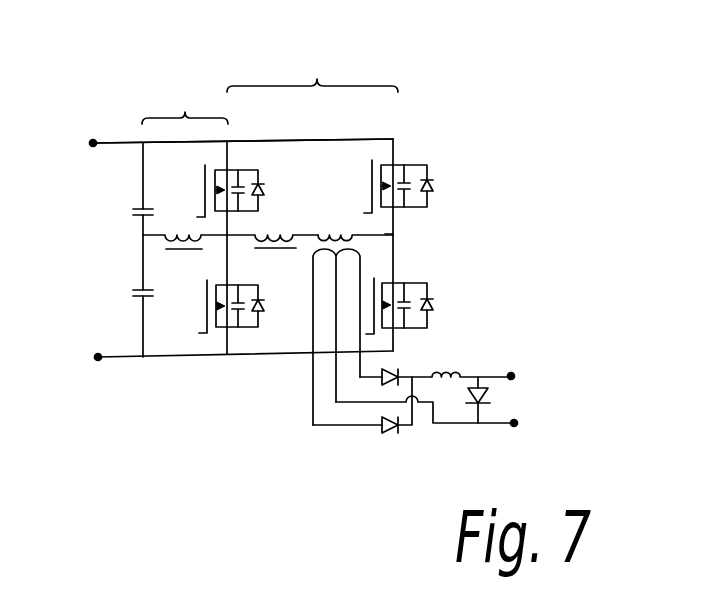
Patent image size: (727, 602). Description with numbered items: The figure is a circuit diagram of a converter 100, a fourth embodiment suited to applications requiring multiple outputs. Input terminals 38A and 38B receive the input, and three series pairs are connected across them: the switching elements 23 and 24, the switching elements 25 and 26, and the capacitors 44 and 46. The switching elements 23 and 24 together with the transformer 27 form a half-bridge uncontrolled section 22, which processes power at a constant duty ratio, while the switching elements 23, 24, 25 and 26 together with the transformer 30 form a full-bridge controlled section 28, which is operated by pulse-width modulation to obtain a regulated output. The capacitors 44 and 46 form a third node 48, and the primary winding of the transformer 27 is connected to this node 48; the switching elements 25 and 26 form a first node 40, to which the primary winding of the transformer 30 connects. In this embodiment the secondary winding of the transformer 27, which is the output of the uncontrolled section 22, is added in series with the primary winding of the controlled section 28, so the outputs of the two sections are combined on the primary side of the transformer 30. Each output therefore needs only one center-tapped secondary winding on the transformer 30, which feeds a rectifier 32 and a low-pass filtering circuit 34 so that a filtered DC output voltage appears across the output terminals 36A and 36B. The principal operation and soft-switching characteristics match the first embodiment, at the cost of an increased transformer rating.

The half-bridge uncontrolled section 22 is at (185, 105).
The switching element 23 is at (237, 170).
The switching element 24 is at (252, 328).
The switching element 25 is at (408, 165).
The switching element 26 is at (403, 283).
The transformer 27 is at (268, 218).
The full-bridge controlled section 28 is at (312, 72).
The transformer 30 is at (362, 234).
The rectifier 32 is at (372, 447).
The filtering circuit 34 is at (483, 352).
The output terminal 36A is at (511, 376).
The output terminal 36B is at (514, 423).
The input terminal 38A is at (95, 140).
The input terminal 38B is at (100, 360).
The first node 40 is at (394, 233).
The capacitor 44 is at (143, 191).
The capacitor 46 is at (143, 313).
The third node 48 is at (143, 236).
The converter 100 is at (431, 109).